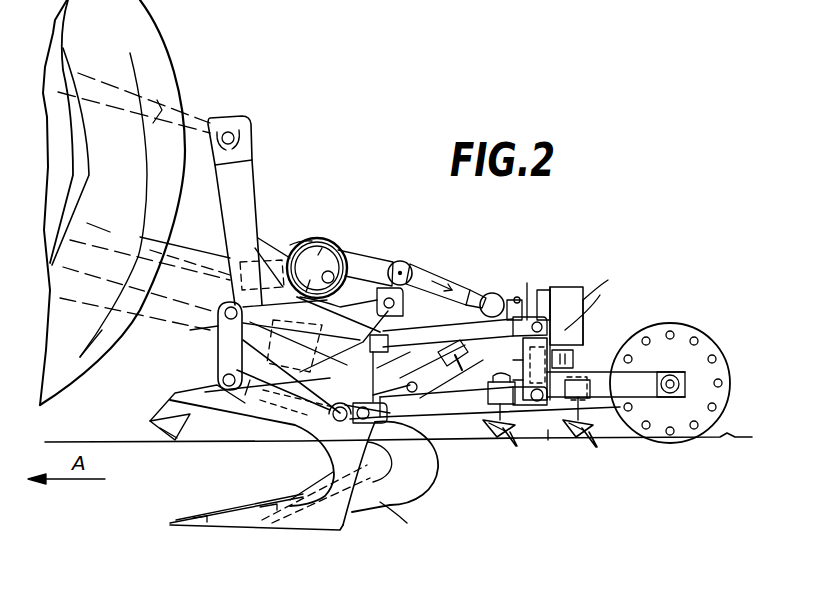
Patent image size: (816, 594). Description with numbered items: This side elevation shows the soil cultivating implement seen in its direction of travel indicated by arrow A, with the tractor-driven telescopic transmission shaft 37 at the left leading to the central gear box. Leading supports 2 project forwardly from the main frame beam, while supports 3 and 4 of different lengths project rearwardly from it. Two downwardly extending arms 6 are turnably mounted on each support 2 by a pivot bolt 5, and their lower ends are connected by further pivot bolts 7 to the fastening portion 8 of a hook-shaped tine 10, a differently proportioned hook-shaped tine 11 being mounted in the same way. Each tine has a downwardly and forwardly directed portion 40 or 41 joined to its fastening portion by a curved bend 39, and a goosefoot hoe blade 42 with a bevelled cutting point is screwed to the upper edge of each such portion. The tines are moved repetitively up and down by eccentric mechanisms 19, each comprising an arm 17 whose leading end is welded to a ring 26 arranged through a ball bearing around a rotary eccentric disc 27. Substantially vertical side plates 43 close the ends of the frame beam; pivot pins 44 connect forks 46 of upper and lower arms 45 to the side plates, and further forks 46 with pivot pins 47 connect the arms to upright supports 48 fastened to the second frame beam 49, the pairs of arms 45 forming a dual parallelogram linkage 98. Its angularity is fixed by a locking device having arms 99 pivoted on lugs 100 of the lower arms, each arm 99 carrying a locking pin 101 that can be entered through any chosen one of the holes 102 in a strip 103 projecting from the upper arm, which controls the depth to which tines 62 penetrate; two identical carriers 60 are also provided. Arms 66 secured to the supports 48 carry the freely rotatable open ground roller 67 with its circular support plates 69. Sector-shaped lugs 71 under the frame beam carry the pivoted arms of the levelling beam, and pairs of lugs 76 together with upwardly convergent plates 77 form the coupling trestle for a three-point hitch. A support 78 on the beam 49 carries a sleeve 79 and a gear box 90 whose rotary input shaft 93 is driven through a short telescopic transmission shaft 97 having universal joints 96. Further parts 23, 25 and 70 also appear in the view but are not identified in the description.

The supports 2 is at (218, 297).
The supports 3 is at (312, 342).
The supports 4 is at (427, 347).
The pivot bolt 5 is at (212, 313).
The arms 6 is at (210, 350).
The pivot bolts 7 is at (215, 378).
The fastening portion 8 is at (252, 453).
The tine 10 is at (345, 520).
The tine 11 is at (432, 483).
The arm 17 is at (360, 258).
The eccentric mechanism 19 is at (326, 248).
The bracket 23 is at (174, 393).
The skid 25 is at (148, 427).
The ring 26 is at (298, 244).
The rotary eccentric disc 27 is at (262, 243).
The telescopic transmission shaft 37 is at (107, 237).
The curved bend 39 is at (410, 490).
The downwardly and forwardly directed portion 40 is at (245, 523).
The downwardly and forwardly directed portion 41 is at (437, 513).
The blade 42 is at (193, 518).
The side plate 43 is at (297, 443).
The pivot pins 44 is at (307, 440).
The arms 45 is at (494, 293).
The forks 46 is at (536, 405).
The pivot pins 47 is at (550, 448).
The upright supports 48 is at (600, 312).
The frame beam 49 is at (520, 372).
The carriers 60 is at (492, 450).
The tines 62 is at (510, 444).
The arms 66 is at (645, 397).
The ground roller 67 is at (670, 360).
The circular support plates 69 is at (702, 338).
The holes 70 is at (712, 359).
The lugs 71 is at (251, 408).
The lugs 76 is at (208, 337).
The plates 77 is at (247, 191).
The support 78 is at (586, 336).
The sleeve 79 is at (578, 361).
The gear box 90 is at (588, 282).
The rotary input shaft 93 is at (526, 298).
The universal joints 96 is at (404, 262).
The telescopic transmission shaft 97 is at (450, 284).
The dual parallelogram linkage 98 is at (489, 386).
The arms 99 is at (412, 406).
The lugs 100 is at (428, 413).
The locking pins 101 is at (470, 337).
The holes 102 is at (511, 330).
The strips 103 is at (480, 349).